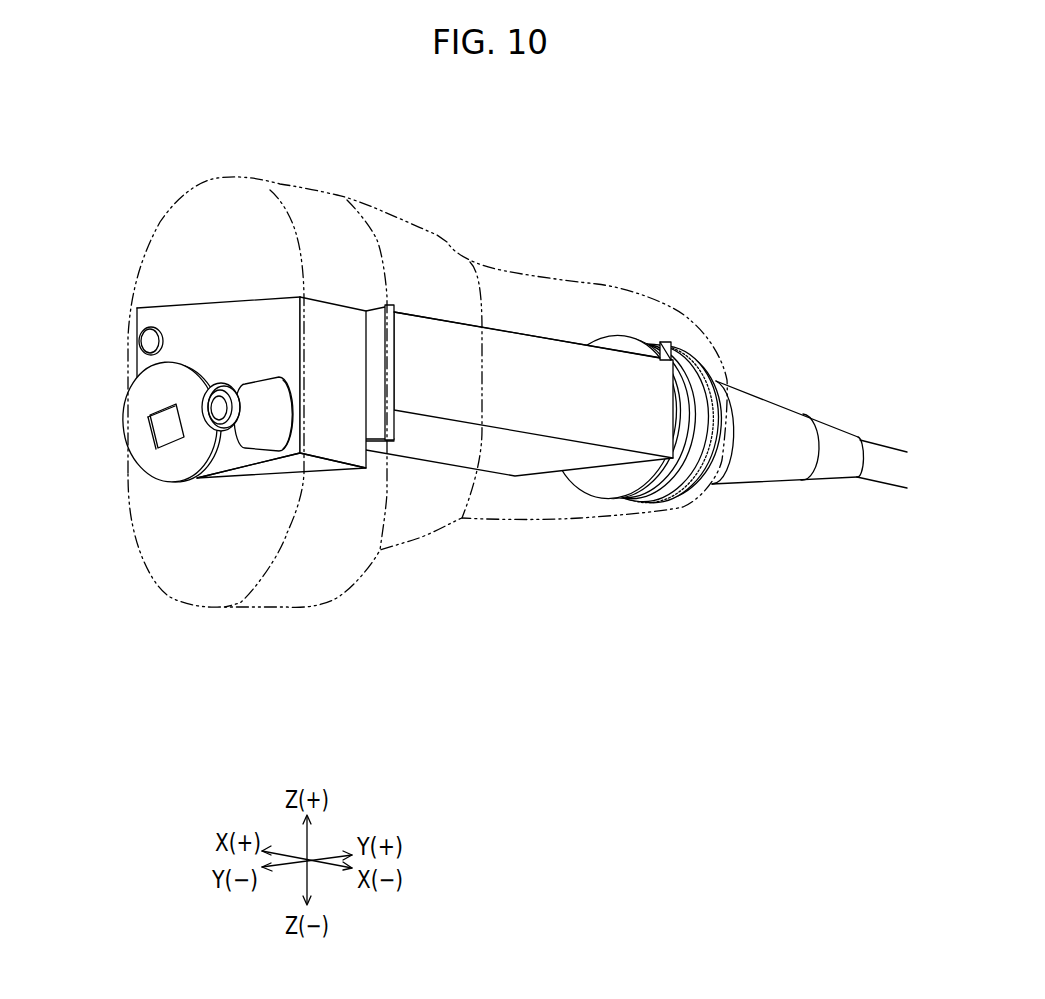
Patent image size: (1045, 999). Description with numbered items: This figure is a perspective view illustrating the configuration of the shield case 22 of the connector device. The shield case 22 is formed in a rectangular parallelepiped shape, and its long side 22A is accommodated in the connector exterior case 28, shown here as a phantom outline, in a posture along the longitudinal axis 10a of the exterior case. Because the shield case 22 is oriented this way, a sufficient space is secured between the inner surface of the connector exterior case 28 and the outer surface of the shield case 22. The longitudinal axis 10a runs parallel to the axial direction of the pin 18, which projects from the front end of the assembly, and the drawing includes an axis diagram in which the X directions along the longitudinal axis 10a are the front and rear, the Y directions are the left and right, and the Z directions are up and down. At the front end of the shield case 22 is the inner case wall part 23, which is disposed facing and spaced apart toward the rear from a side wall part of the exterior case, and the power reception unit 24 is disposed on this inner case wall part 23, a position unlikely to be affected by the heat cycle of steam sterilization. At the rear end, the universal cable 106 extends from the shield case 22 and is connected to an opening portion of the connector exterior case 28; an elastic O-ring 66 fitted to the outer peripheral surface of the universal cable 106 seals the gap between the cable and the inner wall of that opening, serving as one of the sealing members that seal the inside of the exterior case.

The longitudinal axis 10a is at (217, 358).
The pin 18 is at (253, 416).
The shield case 22 is at (417, 311).
The long side 22A is at (513, 332).
The inner case wall part 23 is at (223, 323).
The power reception unit 24 is at (133, 421).
The connector exterior case 28 is at (452, 231).
The O-ring 66 is at (694, 360).
The universal cable 106 is at (889, 455).